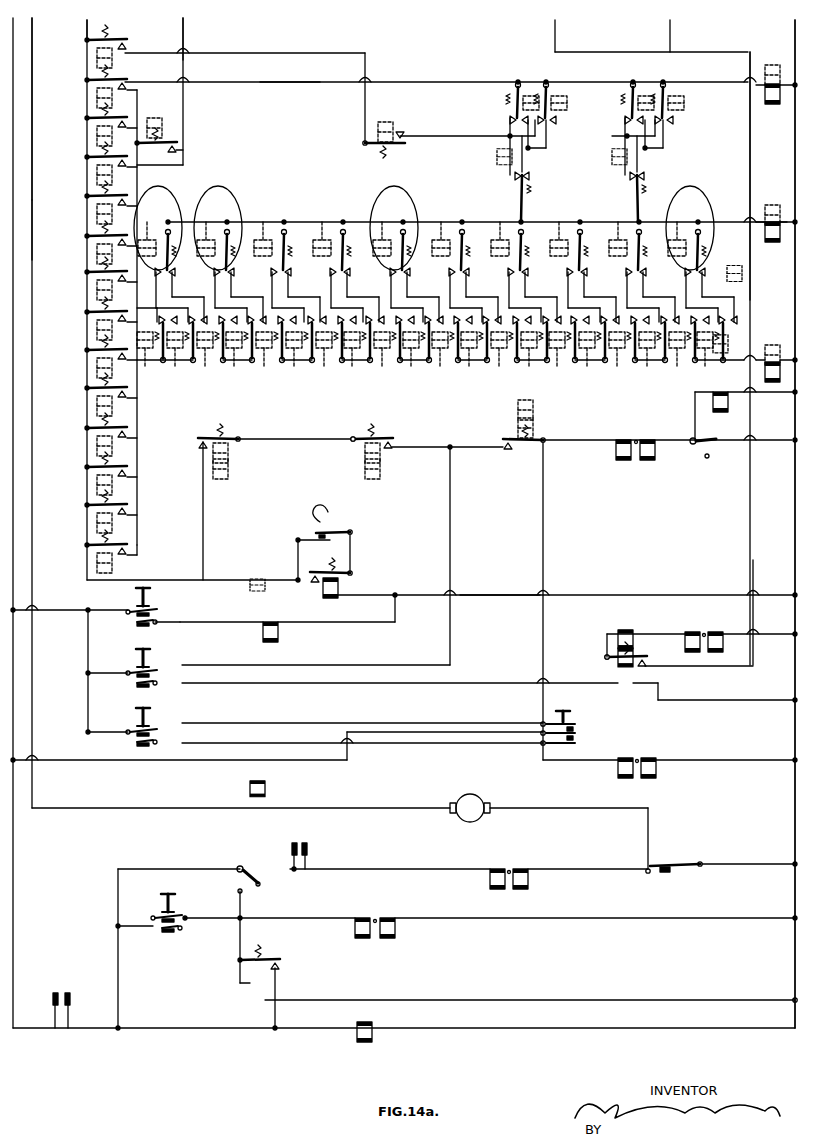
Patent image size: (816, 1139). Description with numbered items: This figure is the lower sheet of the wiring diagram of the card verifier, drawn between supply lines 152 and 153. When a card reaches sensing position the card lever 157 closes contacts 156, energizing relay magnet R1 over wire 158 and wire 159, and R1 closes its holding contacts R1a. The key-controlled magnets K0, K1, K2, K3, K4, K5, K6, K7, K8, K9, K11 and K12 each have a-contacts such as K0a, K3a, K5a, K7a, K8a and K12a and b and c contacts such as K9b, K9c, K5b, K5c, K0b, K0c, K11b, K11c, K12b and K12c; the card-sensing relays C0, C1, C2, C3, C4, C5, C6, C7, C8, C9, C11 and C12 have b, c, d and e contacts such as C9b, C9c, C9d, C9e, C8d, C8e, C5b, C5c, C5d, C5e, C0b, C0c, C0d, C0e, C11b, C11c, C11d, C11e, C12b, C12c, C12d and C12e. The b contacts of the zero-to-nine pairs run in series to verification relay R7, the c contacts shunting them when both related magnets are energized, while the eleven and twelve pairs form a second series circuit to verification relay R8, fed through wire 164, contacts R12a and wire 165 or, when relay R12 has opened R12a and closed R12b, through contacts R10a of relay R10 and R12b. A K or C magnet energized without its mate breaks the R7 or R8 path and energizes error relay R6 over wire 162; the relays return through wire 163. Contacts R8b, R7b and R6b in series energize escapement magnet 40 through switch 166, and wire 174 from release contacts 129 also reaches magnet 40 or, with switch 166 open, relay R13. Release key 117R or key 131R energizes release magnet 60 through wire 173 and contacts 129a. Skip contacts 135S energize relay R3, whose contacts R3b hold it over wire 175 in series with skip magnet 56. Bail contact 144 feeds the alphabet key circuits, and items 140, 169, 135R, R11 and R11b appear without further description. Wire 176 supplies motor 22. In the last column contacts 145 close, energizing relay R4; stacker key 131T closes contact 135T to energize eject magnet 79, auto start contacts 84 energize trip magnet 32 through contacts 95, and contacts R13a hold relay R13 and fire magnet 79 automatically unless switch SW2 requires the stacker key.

The wire 159 is at (87, 27).
The line 152 is at (40, 83).
The wire 176 is at (32, 205).
The relay contacts R10a is at (126, 45).
The relay magnet R10 is at (97, 56).
The relay contacts K12a is at (134, 80).
The relay magnet K12 is at (97, 100).
The relay magnet K11 is at (97, 137).
The relay contacts K0a is at (183, 162).
The relay magnet K0 is at (97, 175).
The relay magnet K1 is at (97, 212).
The relay magnet K2 is at (97, 250).
The relay contacts K3a is at (122, 274).
The relay magnet K3 is at (97, 290).
The wire 164 is at (140, 302).
The relay magnet K4 is at (97, 326).
The relay contacts K5a is at (122, 349).
The relay magnet K5 is at (97, 364).
The relay magnet K6 is at (97, 404).
The relay contacts K7a is at (137, 433).
The relay magnet K7 is at (97, 444).
The relay contacts K8a is at (137, 471).
The relay magnet K8 is at (97, 484).
The relay magnet K9 is at (97, 522).
The relay R11 contact R11b is at (137, 548).
The relay R11 is at (97, 560).
The relay magnet R12 is at (162, 124).
The relay contacts R12a is at (178, 142).
The relay contacts R12b is at (398, 136).
The wire 165 is at (287, 83).
The conductor 169 is at (183, 25).
The wire 162 is at (312, 222).
The relay contacts K11b is at (510, 118).
The relay contacts K11c is at (506, 134).
The relay magnet C11 is at (560, 96).
The relay contacts C11b is at (558, 150).
The relay contacts C11c is at (566, 180).
The relay contacts C11d is at (510, 173).
The relay contacts C11e is at (522, 170).
The relay contacts K12b is at (627, 120).
The relay contacts K12c is at (628, 136).
The relay magnet C12 is at (672, 96).
The relay contacts C12b is at (660, 150).
The relay contacts C12c is at (672, 123).
The relay contacts C12d is at (632, 176).
The relay contacts C12e is at (636, 174).
The wire 175 is at (555, 33).
The wire 163 is at (670, 33).
The line 153 is at (795, 33).
The verification relay magnet R8 is at (770, 104).
The error relay R6 is at (765, 232).
The verification relay magnet R7 is at (720, 386).
The relay magnet R13 is at (728, 404).
The relay magnet C9 is at (208, 372).
The relay contacts C9e is at (167, 176).
The relay contacts C9d is at (165, 191).
The relay contacts C9b is at (217, 352).
The relay contacts C9c is at (226, 360).
The relay contacts K9b is at (158, 332).
The relay contacts K9c is at (164, 305).
The relay magnet C8 is at (270, 372).
The relay contacts C8e is at (226, 176).
The relay contacts C8d is at (224, 191).
The relay magnet C7 is at (328, 372).
The relay magnet C6 is at (386, 372).
The relay magnet C5 is at (444, 372).
The relay contacts C5e is at (398, 176).
The relay contacts C5d is at (397, 191).
The relay contacts C5b is at (431, 367).
The relay contacts C5c is at (435, 301).
The relay contacts K5b is at (398, 310).
The relay contacts K5c is at (408, 307).
The relay magnet C4 is at (502, 372).
The relay magnet C3 is at (557, 372).
The relay magnet C2 is at (616, 372).
The relay magnet C1 is at (674, 372).
The relay magnet C0 is at (742, 334).
The relay contacts C0e is at (702, 181).
The relay contacts C0d is at (699, 195).
The relay contacts C0b is at (718, 308).
The relay contacts C0c is at (726, 318).
The relay contacts K0b is at (660, 312).
The relay contacts K0c is at (681, 314).
The relay contacts R8b is at (200, 442).
The relay contacts R7b is at (396, 444).
The relay contacts R6b is at (512, 446).
The escapement magnet 40 is at (645, 462).
The switch 166 is at (701, 450).
The wire 174 is at (551, 546).
The card lever 157 is at (328, 512).
The card lever contacts 156 is at (330, 536).
The relay contacts R1a is at (301, 580).
The relay magnet R1 is at (340, 586).
The wire 158 is at (503, 594).
The space bar key 140 is at (148, 602).
The bail contact 144 is at (148, 624).
The skip key contacts 135S is at (152, 678).
The release key 131R is at (173, 715).
The release key contact 135R is at (143, 736).
The wire 173 is at (288, 760).
The relay contacts R3b is at (652, 658).
The relay magnet R3 is at (618, 668).
The skip magnet 56 is at (718, 642).
The release key 117R is at (560, 712).
The release key contacts 129 is at (577, 726).
The release key contacts 129a is at (580, 745).
The release magnet 60 is at (656, 765).
The motor 22 is at (475, 802).
The switch SW2 is at (258, 852).
The auto start contacts 84 is at (308, 853).
The trip magnet 32 is at (530, 878).
The contacts 95 is at (682, 868).
The stacker key 131T is at (162, 903).
The stacker key contact 135T is at (160, 928).
The eject magnet 79 is at (390, 926).
The last column contacts 145 is at (72, 1007).
The relay contacts R13a is at (284, 968).
The relay magnet R4 is at (372, 1038).